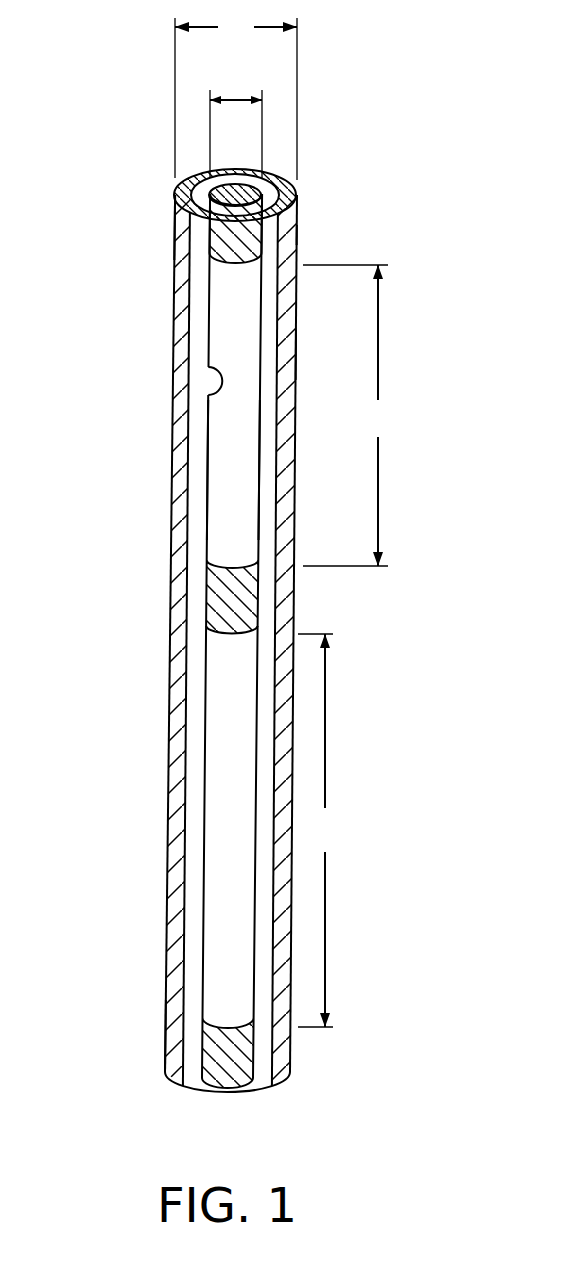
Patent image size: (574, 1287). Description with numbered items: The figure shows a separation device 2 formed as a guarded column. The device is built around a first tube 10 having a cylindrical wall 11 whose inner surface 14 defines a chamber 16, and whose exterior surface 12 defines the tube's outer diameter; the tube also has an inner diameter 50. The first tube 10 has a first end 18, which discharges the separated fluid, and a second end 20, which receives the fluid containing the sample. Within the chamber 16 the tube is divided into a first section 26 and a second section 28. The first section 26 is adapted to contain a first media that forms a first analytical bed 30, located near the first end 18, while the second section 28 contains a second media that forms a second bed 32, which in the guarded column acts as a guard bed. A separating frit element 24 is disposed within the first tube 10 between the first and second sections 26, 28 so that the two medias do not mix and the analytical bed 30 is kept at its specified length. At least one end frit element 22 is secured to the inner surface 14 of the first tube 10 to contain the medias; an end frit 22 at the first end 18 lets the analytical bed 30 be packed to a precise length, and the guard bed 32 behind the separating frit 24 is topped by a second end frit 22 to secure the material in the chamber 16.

The separation device 2 is at (402, 357).
The first tube 10 is at (287, 195).
The cylindrical wall 11 is at (287, 233).
The exterior surface 12 is at (333, 476).
The inner surface 14 is at (208, 367).
The chamber 16 is at (223, 496).
The first end 18 is at (148, 1079).
The second end 20 is at (143, 182).
The end frit element 22 is at (240, 193).
The separating frit element 24 is at (238, 594).
The first section 26 is at (318, 830).
The second section 28 is at (347, 415).
The first analytical bed 30 is at (222, 730).
The second bed 32 is at (225, 307).
The inner diameter 50 is at (235, 97).